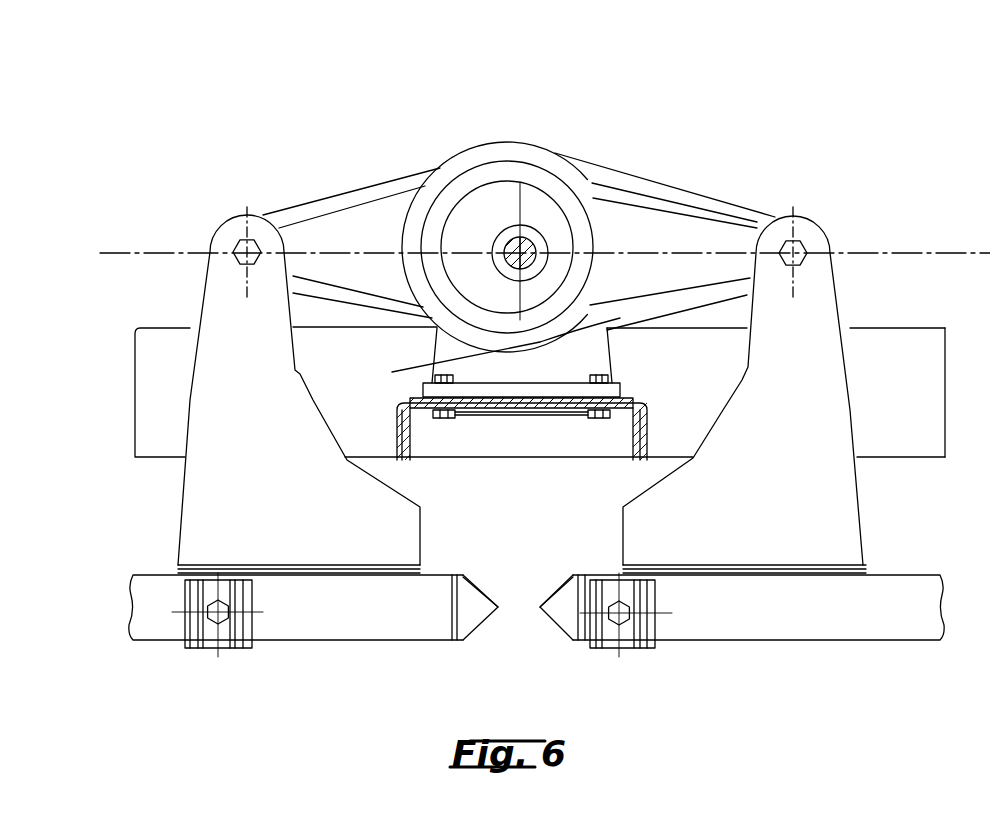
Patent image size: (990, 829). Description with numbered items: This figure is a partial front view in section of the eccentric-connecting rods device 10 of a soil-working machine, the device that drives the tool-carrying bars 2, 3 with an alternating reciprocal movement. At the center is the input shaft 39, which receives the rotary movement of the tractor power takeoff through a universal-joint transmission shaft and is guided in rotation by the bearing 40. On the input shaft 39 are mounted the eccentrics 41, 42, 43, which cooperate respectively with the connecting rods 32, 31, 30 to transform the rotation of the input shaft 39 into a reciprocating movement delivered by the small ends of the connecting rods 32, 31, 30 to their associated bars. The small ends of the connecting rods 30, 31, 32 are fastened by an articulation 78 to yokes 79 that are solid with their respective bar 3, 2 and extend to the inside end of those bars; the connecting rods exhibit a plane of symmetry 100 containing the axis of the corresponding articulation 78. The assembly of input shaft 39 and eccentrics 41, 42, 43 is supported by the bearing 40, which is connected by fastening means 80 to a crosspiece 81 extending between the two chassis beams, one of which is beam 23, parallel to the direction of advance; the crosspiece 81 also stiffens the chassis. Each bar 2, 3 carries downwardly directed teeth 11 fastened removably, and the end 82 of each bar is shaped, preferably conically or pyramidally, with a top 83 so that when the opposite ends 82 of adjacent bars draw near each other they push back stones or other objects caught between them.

The bar 2 is at (403, 628).
The bar 3 is at (802, 622).
The eccentric-connecting rods device 10 is at (498, 186).
The teeth 11 is at (212, 638).
The beam 23 is at (540, 392).
The connecting rod 30 is at (625, 182).
The connecting rod 31 is at (400, 228).
The connecting rod 32 is at (645, 214).
The input shaft 39 is at (527, 242).
The bearing 40 is at (590, 363).
The eccentric 41 is at (504, 205).
The eccentric 42 is at (405, 371).
The eccentric 43 is at (492, 142).
The articulation 78 is at (238, 246).
The yoke 79 is at (522, 394).
The fastening means 80 is at (441, 420).
The crosspiece 81 is at (404, 445).
The end 82 is at (562, 614).
The top 83 is at (498, 606).
The plane of symmetry 100 is at (124, 250).